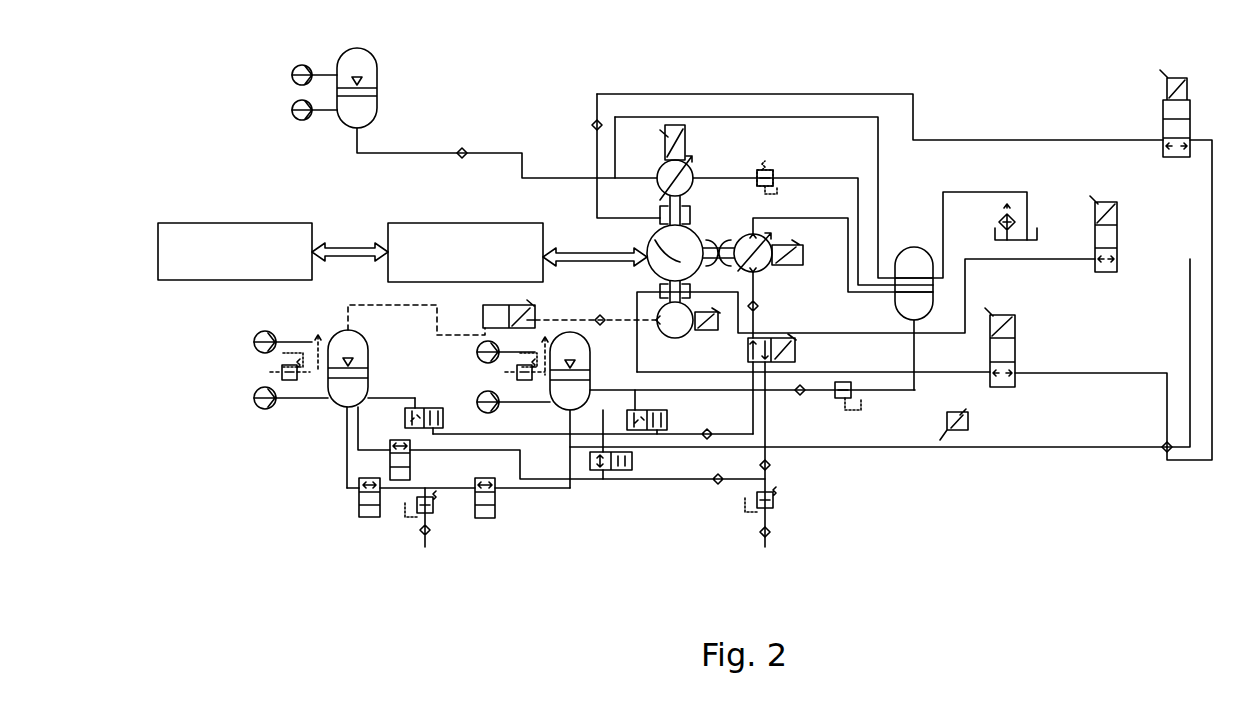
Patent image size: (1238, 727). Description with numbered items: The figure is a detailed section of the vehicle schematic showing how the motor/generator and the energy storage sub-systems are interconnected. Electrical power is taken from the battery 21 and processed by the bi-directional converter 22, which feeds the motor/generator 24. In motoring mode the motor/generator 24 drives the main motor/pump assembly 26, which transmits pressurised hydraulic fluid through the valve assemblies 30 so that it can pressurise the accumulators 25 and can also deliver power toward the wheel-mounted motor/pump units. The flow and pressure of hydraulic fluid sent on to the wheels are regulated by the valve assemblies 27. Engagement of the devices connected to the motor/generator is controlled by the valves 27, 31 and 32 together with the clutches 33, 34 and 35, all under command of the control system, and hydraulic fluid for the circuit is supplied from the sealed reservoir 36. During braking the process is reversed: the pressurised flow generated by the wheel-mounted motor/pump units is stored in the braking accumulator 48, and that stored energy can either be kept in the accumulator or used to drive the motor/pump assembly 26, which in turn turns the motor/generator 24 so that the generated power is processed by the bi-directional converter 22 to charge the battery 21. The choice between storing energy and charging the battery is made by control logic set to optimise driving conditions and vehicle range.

The battery 21 is at (237, 223).
The bi-directional converter 22 is at (463, 223).
The motor/generator 24 is at (648, 240).
The accumulators 25 is at (347, 392).
The motor/pump assembly 26 is at (772, 268).
The valve assemblies 27 is at (392, 470).
The valve assemblies 30 is at (433, 408).
The valve 31 is at (1163, 112).
The valve 32 is at (1030, 380).
The clutch 33 is at (660, 215).
The clutch 34 is at (708, 240).
The clutch 35 is at (660, 300).
The sealed reservoir 36 is at (912, 262).
The braking accumulator 48 is at (363, 112).